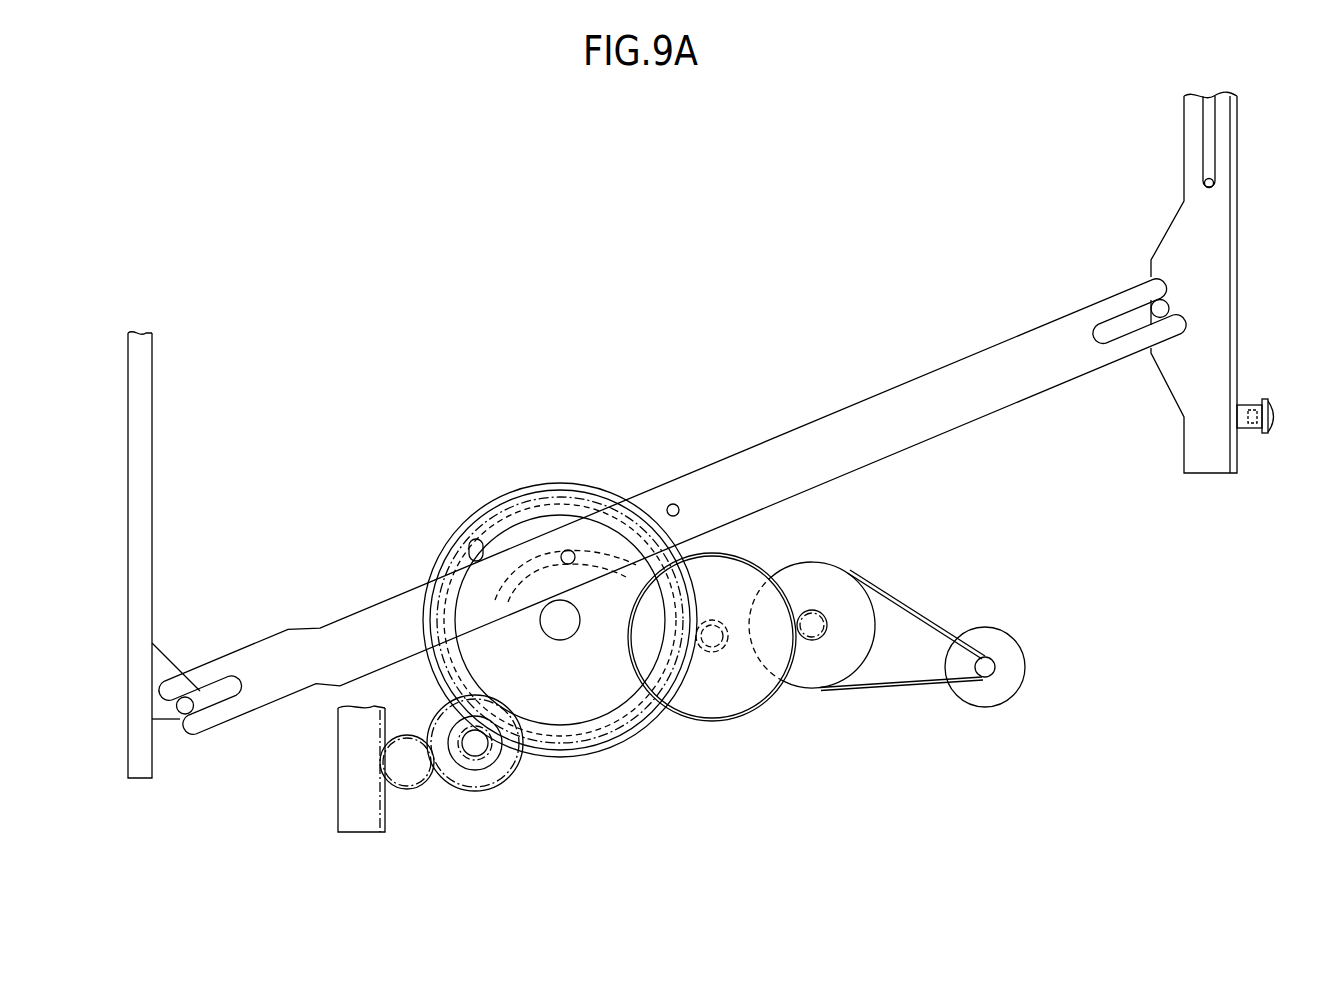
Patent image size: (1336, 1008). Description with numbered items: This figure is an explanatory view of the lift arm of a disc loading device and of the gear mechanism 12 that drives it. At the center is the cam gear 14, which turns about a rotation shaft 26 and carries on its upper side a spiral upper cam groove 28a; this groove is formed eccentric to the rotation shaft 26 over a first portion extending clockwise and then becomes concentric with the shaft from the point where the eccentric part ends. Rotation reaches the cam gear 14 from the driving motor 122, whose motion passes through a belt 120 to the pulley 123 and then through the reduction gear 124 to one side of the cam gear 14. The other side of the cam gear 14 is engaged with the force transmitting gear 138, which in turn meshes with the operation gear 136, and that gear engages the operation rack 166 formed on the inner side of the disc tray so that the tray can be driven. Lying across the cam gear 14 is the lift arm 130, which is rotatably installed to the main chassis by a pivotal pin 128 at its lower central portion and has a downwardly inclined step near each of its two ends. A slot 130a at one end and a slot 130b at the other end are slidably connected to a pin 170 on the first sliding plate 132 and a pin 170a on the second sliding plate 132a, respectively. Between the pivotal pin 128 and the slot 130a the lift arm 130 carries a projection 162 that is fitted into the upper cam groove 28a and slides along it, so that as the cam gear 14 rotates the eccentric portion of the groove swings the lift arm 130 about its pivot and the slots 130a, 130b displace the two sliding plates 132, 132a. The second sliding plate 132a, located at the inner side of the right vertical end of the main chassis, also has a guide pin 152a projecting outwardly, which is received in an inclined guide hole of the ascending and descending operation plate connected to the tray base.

The gear mechanism 12 is at (672, 762).
The cam gear 14 is at (518, 522).
The rotation shaft 26 is at (568, 628).
The upper cam groove 28a is at (468, 554).
The belt 120 is at (935, 620).
The driving motor 122 is at (992, 697).
The pulley 123 is at (815, 663).
The reduction gear 124 is at (727, 690).
The pivotal pin 128 is at (673, 504).
The lift arm 130 is at (830, 437).
The slot 130a is at (212, 687).
The slot 130b is at (1113, 330).
The first sliding plate 132 is at (141, 429).
The second sliding plate 132a is at (1191, 248).
The operation gear 136 is at (410, 775).
The force transmitting gear 138 is at (497, 773).
The guide pin 152a is at (1250, 428).
The projection 162 is at (569, 551).
The operation rack 166 is at (360, 822).
The pin 170 is at (188, 722).
The pin 170a is at (1166, 303).